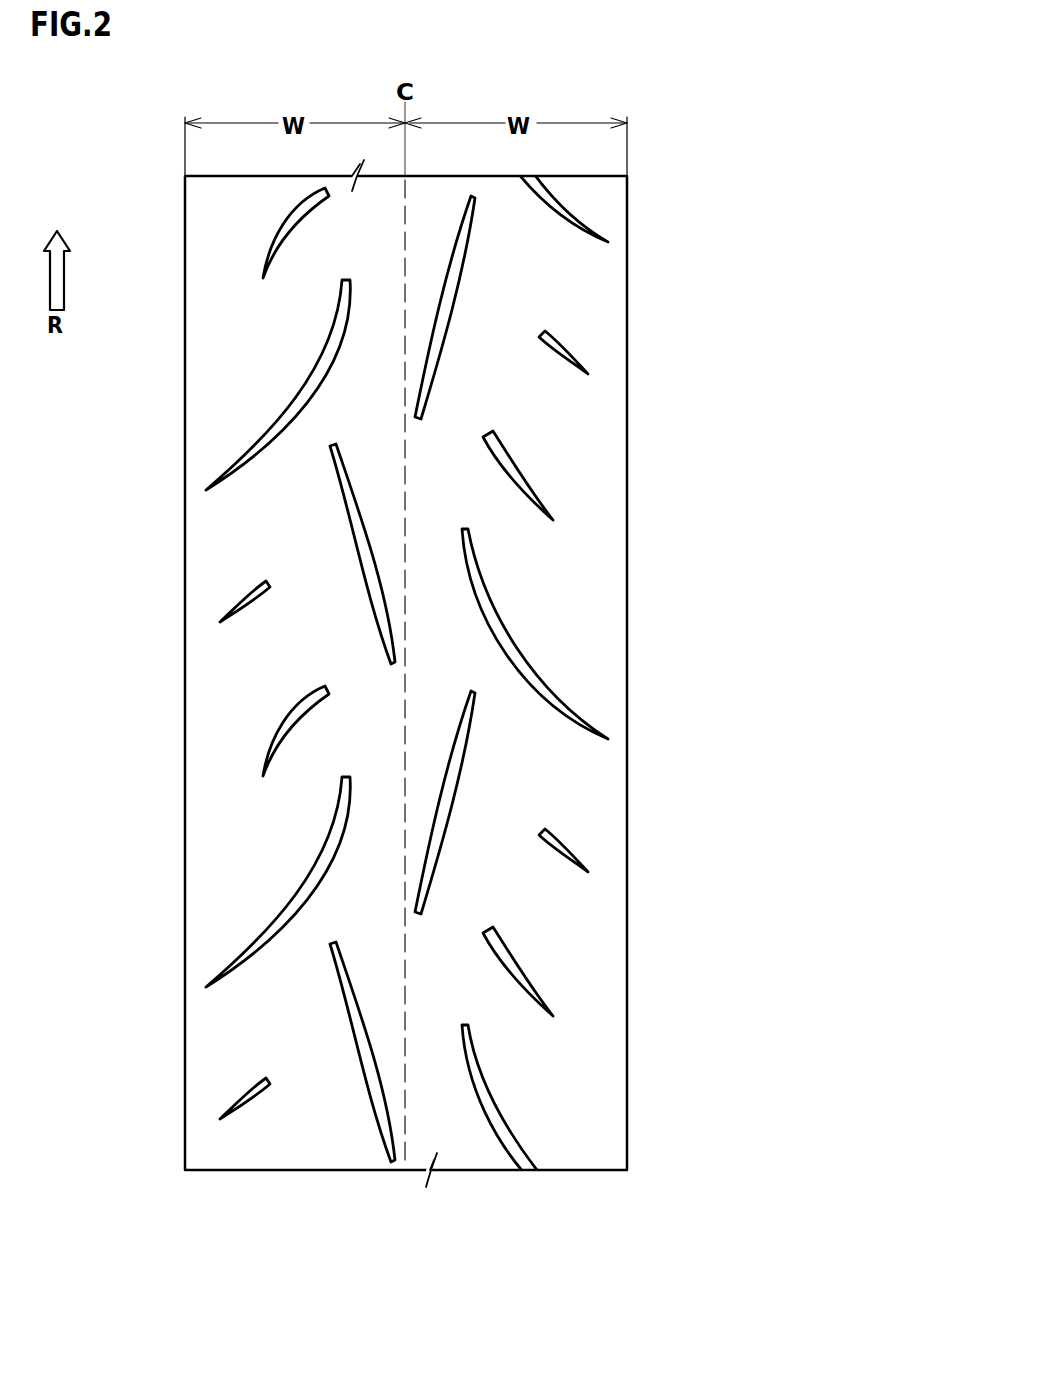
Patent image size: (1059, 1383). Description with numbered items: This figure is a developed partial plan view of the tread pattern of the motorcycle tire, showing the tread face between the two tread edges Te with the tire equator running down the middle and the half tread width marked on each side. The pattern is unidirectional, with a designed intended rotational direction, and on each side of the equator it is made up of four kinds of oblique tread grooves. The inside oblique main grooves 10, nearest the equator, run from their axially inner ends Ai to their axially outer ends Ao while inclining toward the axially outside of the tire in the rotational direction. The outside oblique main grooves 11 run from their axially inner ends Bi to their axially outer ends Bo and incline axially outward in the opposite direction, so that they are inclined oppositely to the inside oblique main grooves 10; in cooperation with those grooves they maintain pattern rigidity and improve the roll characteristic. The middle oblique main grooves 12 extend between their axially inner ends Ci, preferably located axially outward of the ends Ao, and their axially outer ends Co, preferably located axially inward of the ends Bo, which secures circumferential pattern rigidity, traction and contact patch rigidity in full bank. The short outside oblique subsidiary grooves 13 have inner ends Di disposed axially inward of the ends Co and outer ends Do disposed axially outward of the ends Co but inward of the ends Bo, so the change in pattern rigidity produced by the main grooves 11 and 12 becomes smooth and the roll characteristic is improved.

The inside oblique main groove 10 is at (347, 515).
The outside oblique main groove 11 is at (327, 342).
The middle oblique main groove 12 is at (288, 233).
The outside oblique subsidiary groove 13 is at (240, 590).
The tread edge Te is at (185, 197).
The axially outer end of inside oblique main groove Ao is at (330, 440).
The axially inner end of inside oblique main groove Ai is at (393, 668).
The axially inner end of outside oblique main groove Bi is at (467, 529).
The axially outer end of outside oblique main groove Bo is at (608, 740).
The axially inner end of middle oblique main groove Ci is at (490, 434).
The axially outer end of middle oblique main groove Co is at (555, 522).
The axially inner end of outside oblique subsidiary groove Di is at (268, 582).
The axially outer end of outside oblique subsidiary groove Do is at (220, 622).